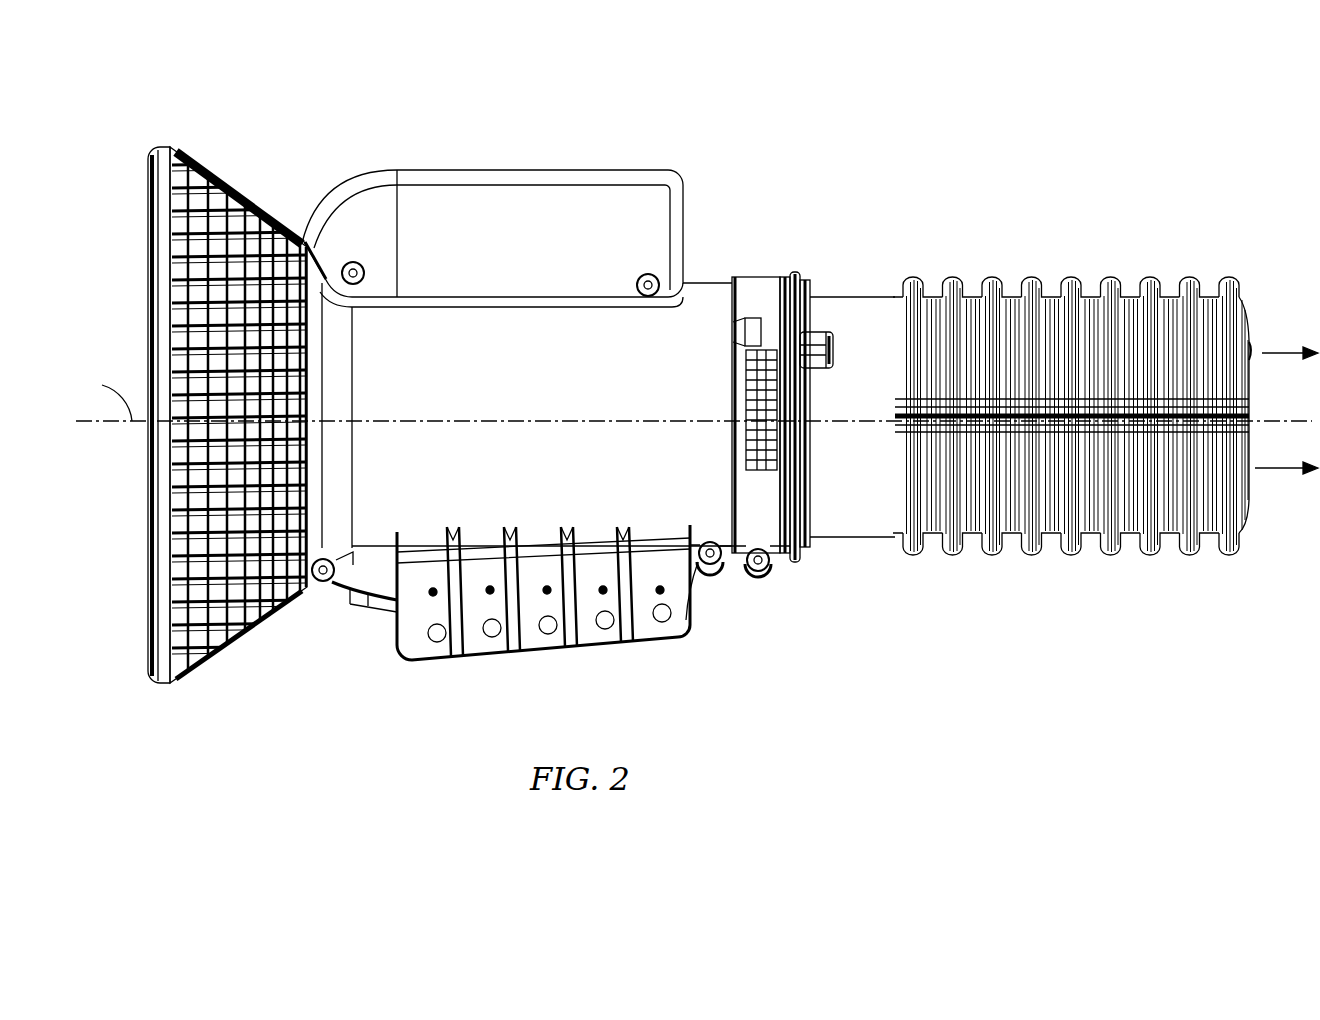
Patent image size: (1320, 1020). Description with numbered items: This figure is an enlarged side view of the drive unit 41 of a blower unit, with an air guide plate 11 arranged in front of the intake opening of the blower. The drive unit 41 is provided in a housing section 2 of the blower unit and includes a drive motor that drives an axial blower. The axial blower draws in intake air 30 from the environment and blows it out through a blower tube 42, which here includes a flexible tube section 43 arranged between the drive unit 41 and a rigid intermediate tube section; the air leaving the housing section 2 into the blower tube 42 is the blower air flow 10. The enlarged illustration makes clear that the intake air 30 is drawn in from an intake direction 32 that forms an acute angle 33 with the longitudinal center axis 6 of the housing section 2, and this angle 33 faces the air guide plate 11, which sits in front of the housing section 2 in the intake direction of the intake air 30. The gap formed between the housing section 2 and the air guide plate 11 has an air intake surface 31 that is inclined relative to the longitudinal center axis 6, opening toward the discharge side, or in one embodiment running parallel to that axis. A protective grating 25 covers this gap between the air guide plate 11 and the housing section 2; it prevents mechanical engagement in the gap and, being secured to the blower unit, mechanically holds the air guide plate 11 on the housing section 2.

The housing section 2 is at (600, 393).
The longitudinal center axis 6 is at (852, 415).
The blower air flow 10 is at (1282, 352).
The air guide plate 11 is at (150, 601).
The protective grating 25 is at (208, 447).
The intake air 30 is at (192, 380).
The air intake surface 31 is at (190, 148).
The intake direction 32 is at (188, 253).
The acute angle 33 is at (100, 418).
The drive unit 41 is at (693, 513).
The blower tube 42 is at (1072, 413).
The flexible tube section 43 is at (968, 540).